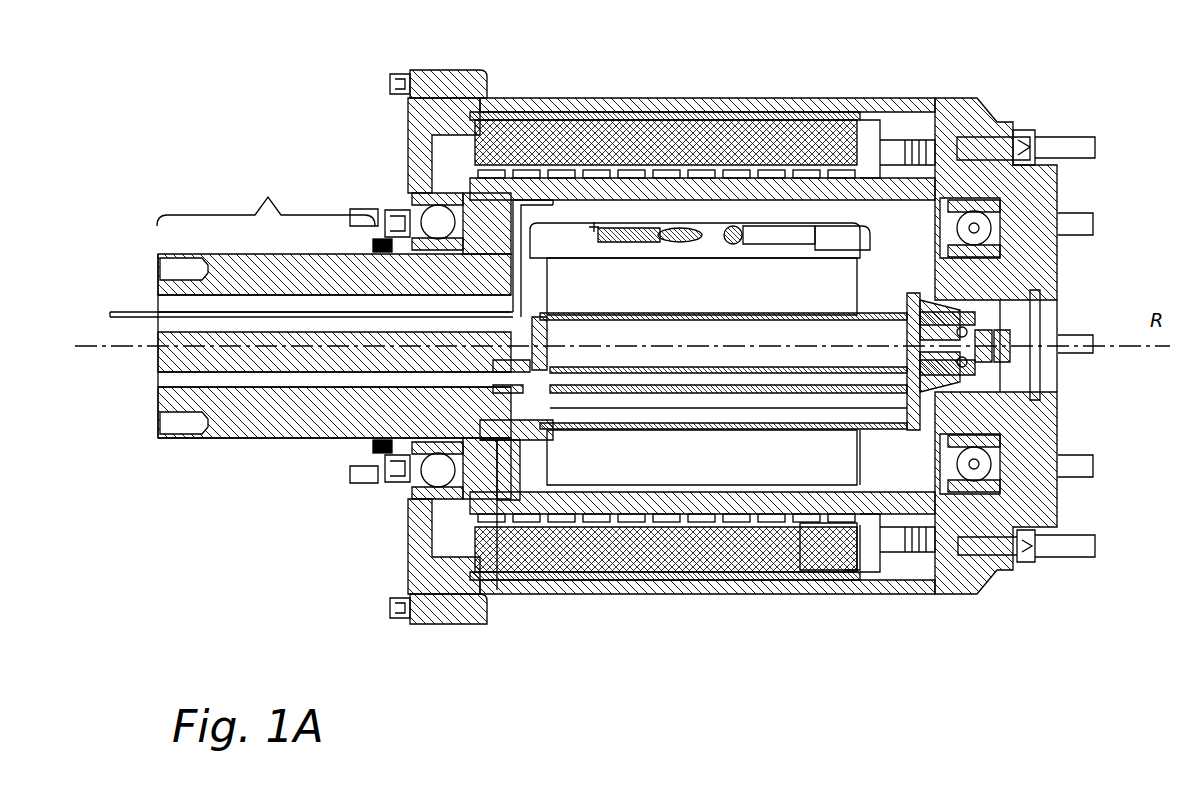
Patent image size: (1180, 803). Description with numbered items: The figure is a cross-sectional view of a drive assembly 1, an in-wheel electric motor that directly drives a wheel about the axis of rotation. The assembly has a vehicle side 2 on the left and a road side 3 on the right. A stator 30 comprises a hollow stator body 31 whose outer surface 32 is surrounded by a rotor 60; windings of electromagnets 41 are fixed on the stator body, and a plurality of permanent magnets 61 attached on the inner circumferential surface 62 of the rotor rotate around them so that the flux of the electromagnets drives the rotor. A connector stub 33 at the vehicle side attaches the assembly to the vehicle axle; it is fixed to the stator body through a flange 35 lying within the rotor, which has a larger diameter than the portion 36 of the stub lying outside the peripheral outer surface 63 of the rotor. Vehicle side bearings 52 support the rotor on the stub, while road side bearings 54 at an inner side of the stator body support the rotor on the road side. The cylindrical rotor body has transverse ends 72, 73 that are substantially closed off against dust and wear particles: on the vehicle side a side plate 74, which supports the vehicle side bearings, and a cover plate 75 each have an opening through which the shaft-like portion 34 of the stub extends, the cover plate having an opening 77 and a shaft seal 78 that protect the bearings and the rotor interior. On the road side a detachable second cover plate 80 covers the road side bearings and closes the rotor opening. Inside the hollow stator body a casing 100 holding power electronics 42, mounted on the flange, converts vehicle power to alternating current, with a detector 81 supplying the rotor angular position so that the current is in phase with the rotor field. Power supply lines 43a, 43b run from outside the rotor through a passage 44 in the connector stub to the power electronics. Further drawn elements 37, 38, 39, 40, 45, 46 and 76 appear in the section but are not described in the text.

The drive assembly 1 is at (182, 188).
The vehicle side 2 is at (124, 297).
The road side 3 is at (1068, 287).
The stator 30 is at (310, 420).
The hollow stator body 31 is at (878, 555).
The outer surface 32 is at (763, 514).
The connector stub 33 is at (238, 470).
The portion of the connector stub 34 is at (215, 440).
The flange 35 is at (437, 208).
The portion of the stub 36 is at (267, 197).
The stator tooth 37 is at (718, 200).
The stator tooth 38 is at (562, 522).
The rotor 39 is at (700, 485).
The winding 40 is at (641, 518).
The electromagnets 41 is at (768, 228).
The power electronics 42 is at (527, 137).
The power supply line 43a is at (150, 308).
The power supply line 43b is at (815, 226).
The passage 44 is at (215, 300).
The channel 45 is at (168, 380).
The flange 46 is at (492, 507).
The vehicle side bearings 52 is at (400, 200).
The road side bearings 54 is at (976, 228).
The rotor 60 is at (1000, 93).
The permanent magnets 61 is at (572, 100).
The inner circumferential surface 62 is at (604, 120).
The peripheral outer surface 63 is at (642, 112).
The transverse end 72 is at (362, 168).
The transverse end 73 is at (1046, 127).
The side plate 74 is at (406, 112).
The cover plate 75 is at (404, 573).
The bolt 76 is at (428, 512).
The opening 77 is at (382, 487).
The shaft seal 78 is at (370, 448).
The detachable second cover plate 80 is at (1058, 500).
The detector 81 is at (1018, 362).
The casing 100 is at (815, 258).